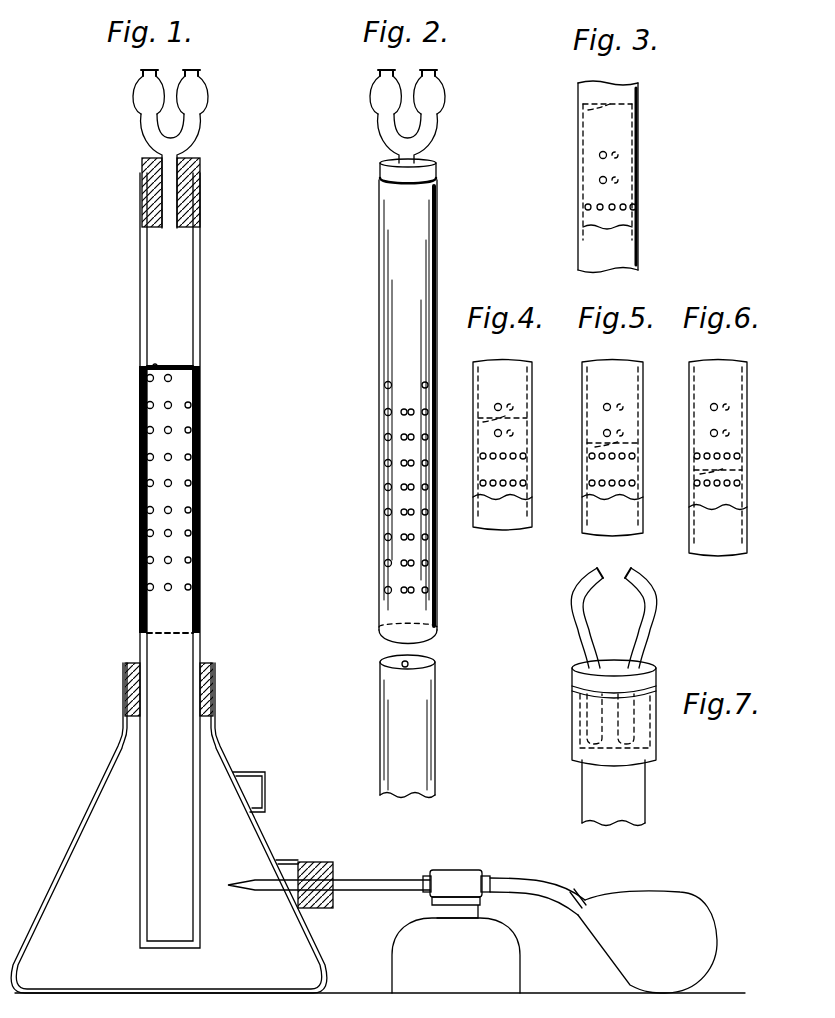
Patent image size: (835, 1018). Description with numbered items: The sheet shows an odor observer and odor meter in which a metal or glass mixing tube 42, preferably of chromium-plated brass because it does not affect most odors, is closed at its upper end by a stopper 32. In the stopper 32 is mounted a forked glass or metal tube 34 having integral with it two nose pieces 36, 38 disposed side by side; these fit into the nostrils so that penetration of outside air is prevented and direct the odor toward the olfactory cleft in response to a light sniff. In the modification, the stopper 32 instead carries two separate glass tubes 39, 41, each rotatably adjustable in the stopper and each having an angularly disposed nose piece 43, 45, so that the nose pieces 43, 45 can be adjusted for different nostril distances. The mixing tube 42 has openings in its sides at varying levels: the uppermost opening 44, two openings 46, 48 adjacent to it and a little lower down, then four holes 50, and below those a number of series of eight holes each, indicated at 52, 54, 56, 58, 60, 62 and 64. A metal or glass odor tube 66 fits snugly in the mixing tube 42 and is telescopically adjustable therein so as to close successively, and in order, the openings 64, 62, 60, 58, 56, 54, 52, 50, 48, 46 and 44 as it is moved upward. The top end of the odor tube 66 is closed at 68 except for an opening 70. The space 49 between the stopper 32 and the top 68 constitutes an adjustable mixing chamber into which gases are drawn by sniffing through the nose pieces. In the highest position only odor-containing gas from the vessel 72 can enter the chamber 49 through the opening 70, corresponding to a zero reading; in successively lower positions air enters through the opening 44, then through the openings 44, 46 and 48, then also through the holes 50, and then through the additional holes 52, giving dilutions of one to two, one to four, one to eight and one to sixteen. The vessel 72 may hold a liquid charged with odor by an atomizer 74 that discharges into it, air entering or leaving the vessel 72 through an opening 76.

In FIG. 1, the stopper 32 is at (142, 161).
In FIG. 2, the stopper 32 is at (380, 170).
In FIG. 7, the stopper 32 is at (656, 668).
In FIG. 1, the forked tube 34 is at (142, 127).
In FIG. 2, the forked tube 34 is at (383, 138).
In FIG. 1, the nose piece 36 is at (201, 72).
In FIG. 2, the nose piece 36 is at (446, 91).
In FIG. 1, the nose piece 38 is at (140, 72).
In FIG. 2, the nose piece 38 is at (362, 91).
In FIG. 7, the glass tube 39 is at (580, 645).
In FIG. 7, the glass tube 41 is at (645, 640).
In FIG. 1, the mixing tube 42 is at (140, 263).
In FIG. 2, the mixing tube 42 is at (380, 322).
In FIG. 3, the mixing tube 42 is at (578, 87).
In FIG. 4, the mixing tube 42 is at (510, 362).
In FIG. 5, the mixing tube 42 is at (620, 362).
In FIG. 6, the mixing tube 42 is at (735, 362).
In FIG. 7, the mixing tube 42 is at (645, 808).
In FIG. 7, the nose piece 43 is at (580, 592).
In FIG. 1, the uppermost opening 44 is at (200, 360).
In FIG. 2, the uppermost opening 44 is at (437, 348).
In FIG. 3, the uppermost opening 44 is at (636, 128).
In FIG. 4, the uppermost opening 44 is at (533, 372).
In FIG. 5, the uppermost opening 44 is at (643, 372).
In FIG. 6, the uppermost opening 44 is at (748, 372).
In FIG. 7, the nose piece 45 is at (648, 592).
In FIG. 2, the opening 46 is at (388, 385).
In FIG. 3, the opening 46 is at (600, 156).
In FIG. 4, the opening 46 is at (500, 407).
In FIG. 5, the opening 46 is at (610, 407).
In FIG. 6, the opening 46 is at (716, 407).
In FIG. 1, the opening 48 is at (172, 378).
In FIG. 2, the opening 48 is at (426, 385).
In FIG. 3, the opening 48 is at (620, 155).
In FIG. 4, the opening 48 is at (512, 407).
In FIG. 5, the opening 48 is at (622, 407).
In FIG. 6, the opening 48 is at (728, 407).
In FIG. 1, the adjustable mixing chamber 49 is at (180, 295).
In FIG. 1, the holes 50 is at (160, 412).
In FIG. 2, the holes 50 is at (425, 408).
In FIG. 3, the holes 50 is at (620, 182).
In FIG. 4, the holes 50 is at (512, 433).
In FIG. 5, the holes 50 is at (622, 433).
In FIG. 6, the holes 50 is at (728, 433).
In FIG. 1, the series of eight holes 52 is at (190, 432).
In FIG. 2, the series of eight holes 52 is at (388, 435).
In FIG. 3, the series of eight holes 52 is at (585, 209).
In FIG. 4, the series of eight holes 52 is at (527, 456).
In FIG. 5, the series of eight holes 52 is at (640, 456).
In FIG. 6, the series of eight holes 52 is at (747, 456).
In FIG. 1, the series of eight holes 54 is at (152, 462).
In FIG. 2, the series of eight holes 54 is at (388, 463).
In FIG. 4, the series of eight holes 54 is at (522, 485).
In FIG. 5, the series of eight holes 54 is at (632, 485).
In FIG. 6, the series of eight holes 54 is at (737, 485).
In FIG. 1, the series of eight holes 56 is at (190, 488).
In FIG. 2, the series of eight holes 56 is at (388, 487).
In FIG. 1, the series of eight holes 58 is at (152, 514).
In FIG. 2, the series of eight holes 58 is at (430, 505).
In FIG. 1, the series of eight holes 60 is at (190, 540).
In FIG. 2, the series of eight holes 60 is at (388, 537).
In FIG. 1, the series of eight holes 62 is at (150, 568).
In FIG. 2, the series of eight holes 62 is at (428, 563).
In FIG. 1, the series of eight holes 64 is at (188, 588).
In FIG. 2, the series of eight holes 64 is at (385, 583).
In FIG. 1, the odor tube 66 is at (160, 650).
In FIG. 2, the odor tube 66 is at (430, 747).
In FIG. 3, the odor tube 66 is at (628, 250).
In FIG. 4, the odor tube 66 is at (520, 527).
In FIG. 5, the odor tube 66 is at (620, 533).
In FIG. 6, the odor tube 66 is at (725, 553).
In FIG. 1, the closed top end 68 is at (148, 366).
In FIG. 2, the closed top end 68 is at (430, 662).
In FIG. 3, the closed top end 68 is at (638, 92).
In FIG. 4, the closed top end 68 is at (478, 418).
In FIG. 5, the closed top end 68 is at (587, 443).
In FIG. 6, the closed top end 68 is at (694, 470).
In FIG. 1, the opening 70 is at (155, 366).
In FIG. 2, the opening 70 is at (402, 664).
In FIG. 3, the opening 70 is at (590, 112).
In FIG. 4, the opening 70 is at (527, 420).
In FIG. 5, the opening 70 is at (640, 444).
In FIG. 6, the opening 70 is at (745, 471).
In FIG. 1, the vessel 72 is at (58, 868).
In FIG. 1, the atomizer 74 is at (500, 955).
In FIG. 1, the opening 76 is at (266, 792).